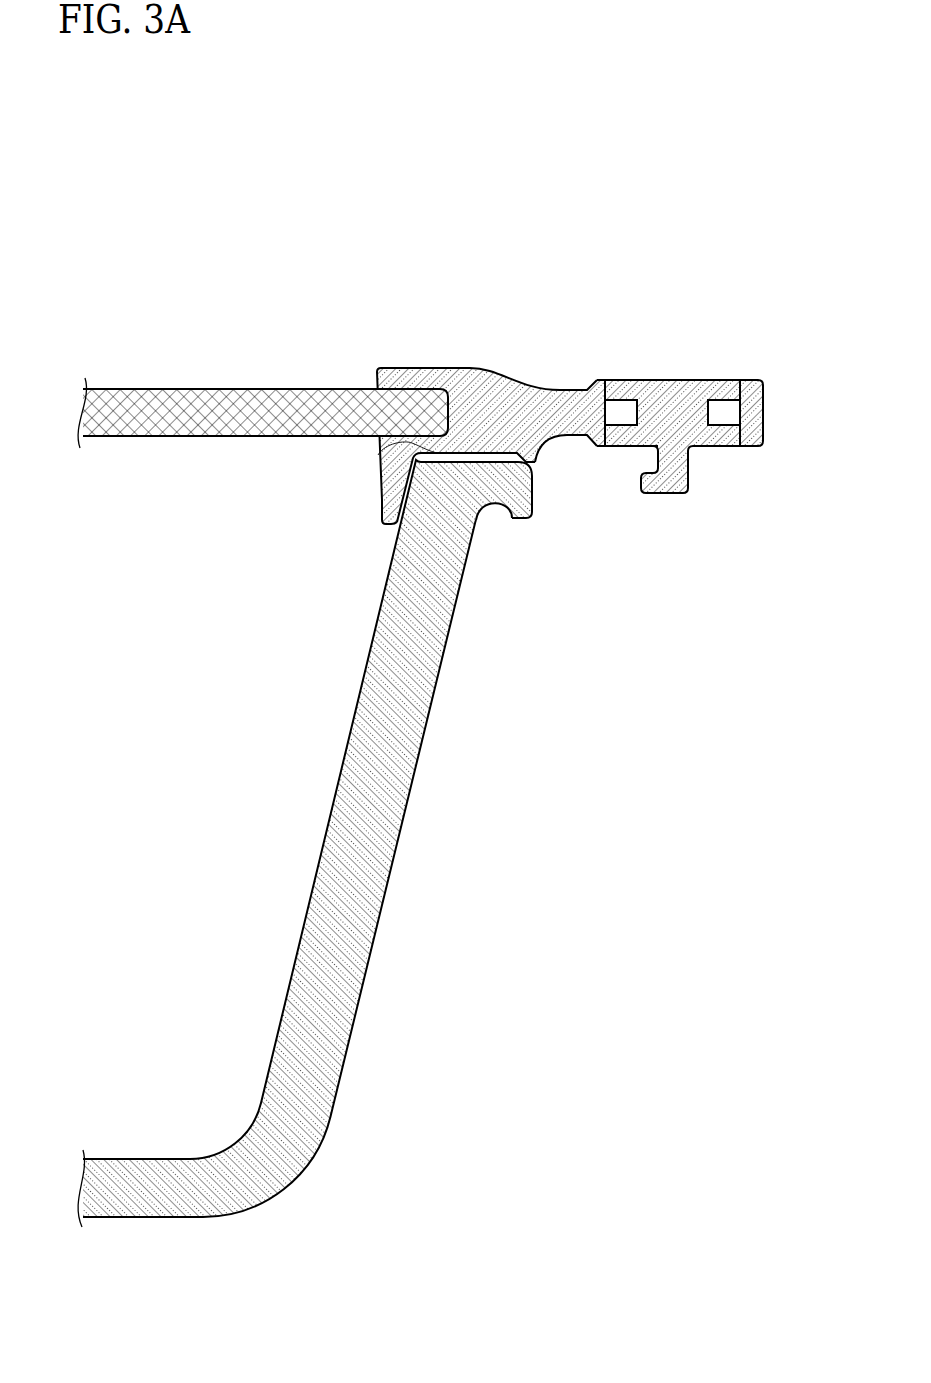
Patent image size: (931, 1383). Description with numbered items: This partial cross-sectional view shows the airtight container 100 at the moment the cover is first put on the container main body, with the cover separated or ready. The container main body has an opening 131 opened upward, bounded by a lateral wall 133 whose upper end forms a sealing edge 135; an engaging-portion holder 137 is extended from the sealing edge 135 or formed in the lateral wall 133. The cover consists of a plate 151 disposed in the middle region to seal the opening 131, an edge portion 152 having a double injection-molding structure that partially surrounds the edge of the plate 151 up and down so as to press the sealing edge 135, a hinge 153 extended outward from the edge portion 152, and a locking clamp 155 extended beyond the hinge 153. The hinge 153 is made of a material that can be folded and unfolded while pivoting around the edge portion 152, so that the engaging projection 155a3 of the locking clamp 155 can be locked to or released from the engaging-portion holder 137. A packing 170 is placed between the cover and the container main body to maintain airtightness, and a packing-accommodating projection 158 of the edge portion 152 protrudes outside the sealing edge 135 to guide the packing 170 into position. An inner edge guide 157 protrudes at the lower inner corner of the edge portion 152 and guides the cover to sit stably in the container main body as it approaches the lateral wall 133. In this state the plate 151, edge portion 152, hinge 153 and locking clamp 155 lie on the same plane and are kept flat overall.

The airtight container 100 is at (140, 168).
The opening 131 is at (184, 470).
The lateral wall 133 is at (398, 846).
The sealing edge 135 is at (382, 460).
The engaging-portion holder 137 is at (520, 522).
The plate 151 is at (185, 392).
The edge portion 152 is at (398, 370).
The hinge 153 is at (567, 390).
The locking clamp 155 is at (747, 380).
The engaging projection 155a3 is at (648, 485).
The inner edge guide 157 is at (382, 512).
The packing-accommodating projection 158 is at (543, 468).
The packing 170 is at (477, 453).